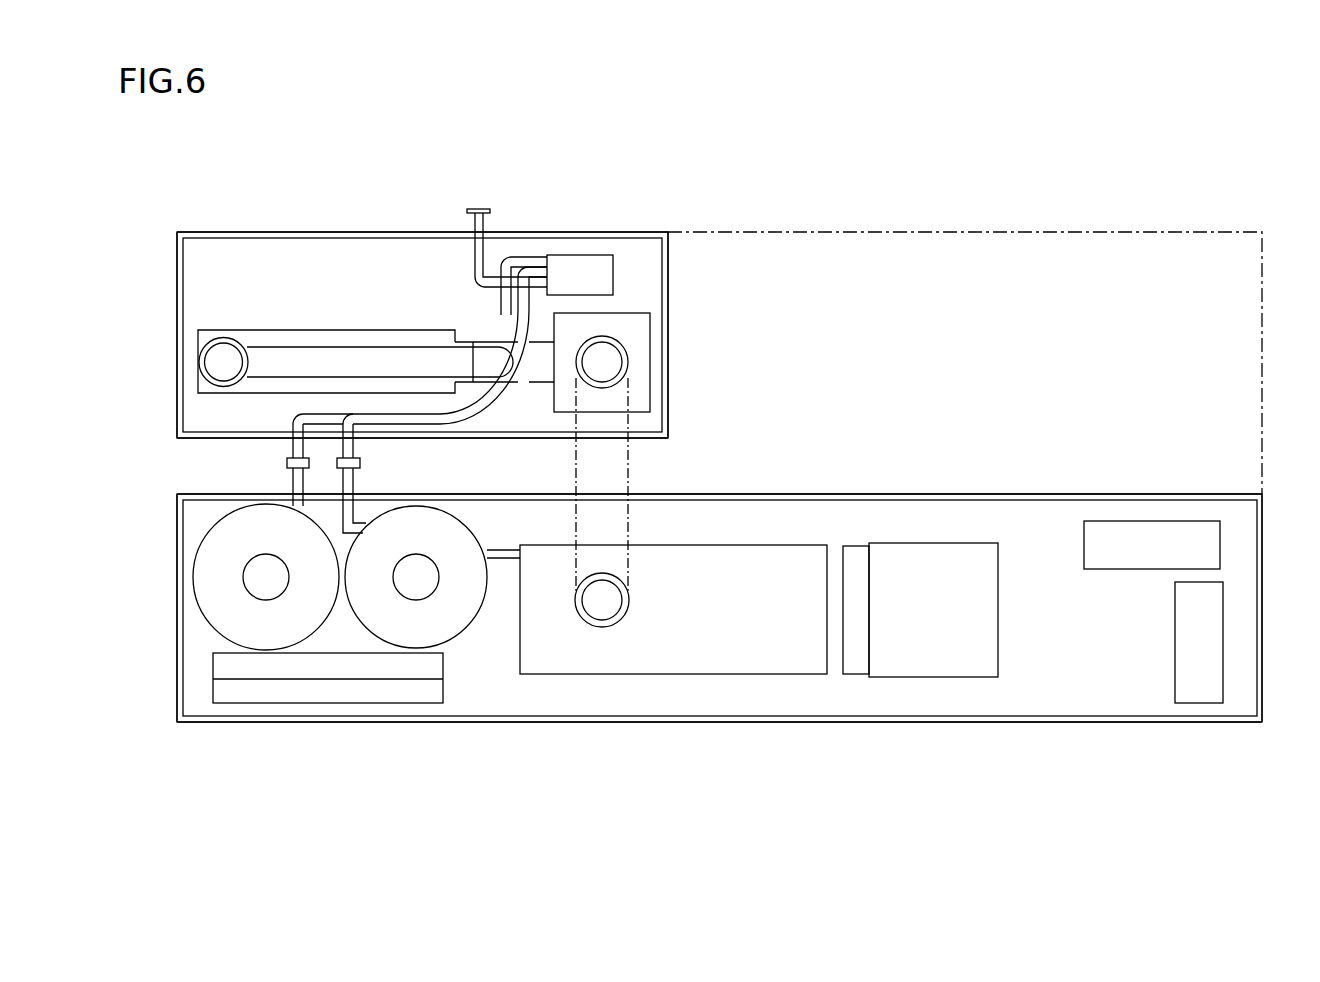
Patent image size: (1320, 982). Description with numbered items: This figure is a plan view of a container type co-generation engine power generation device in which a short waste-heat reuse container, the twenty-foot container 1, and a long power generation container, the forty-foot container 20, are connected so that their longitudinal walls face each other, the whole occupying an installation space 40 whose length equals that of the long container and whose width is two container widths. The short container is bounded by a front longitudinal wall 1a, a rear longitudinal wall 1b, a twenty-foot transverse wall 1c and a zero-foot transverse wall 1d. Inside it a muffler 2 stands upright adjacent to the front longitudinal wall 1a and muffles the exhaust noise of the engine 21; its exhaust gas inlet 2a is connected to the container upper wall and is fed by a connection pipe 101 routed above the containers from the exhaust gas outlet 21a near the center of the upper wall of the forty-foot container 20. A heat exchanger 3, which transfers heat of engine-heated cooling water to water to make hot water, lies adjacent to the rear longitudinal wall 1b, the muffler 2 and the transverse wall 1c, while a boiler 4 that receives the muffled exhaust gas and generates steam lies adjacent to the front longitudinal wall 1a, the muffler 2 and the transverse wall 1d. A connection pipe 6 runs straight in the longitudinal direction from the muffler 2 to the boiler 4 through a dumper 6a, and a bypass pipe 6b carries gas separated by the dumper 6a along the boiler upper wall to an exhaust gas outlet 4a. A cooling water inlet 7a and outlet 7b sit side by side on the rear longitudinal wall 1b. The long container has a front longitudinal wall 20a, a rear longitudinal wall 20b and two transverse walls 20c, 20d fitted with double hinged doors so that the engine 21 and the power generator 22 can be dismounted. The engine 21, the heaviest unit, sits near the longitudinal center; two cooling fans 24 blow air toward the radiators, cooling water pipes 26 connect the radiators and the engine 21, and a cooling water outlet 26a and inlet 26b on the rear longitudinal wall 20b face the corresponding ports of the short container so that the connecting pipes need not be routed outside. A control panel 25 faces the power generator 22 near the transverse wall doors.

The 20-f container 1 is at (627, 210).
The front longitudinal wall 1a is at (281, 231).
The rear longitudinal wall 1b is at (480, 441).
The 20-f transverse wall 1c is at (674, 318).
The 0-f transverse wall 1d is at (170, 318).
The muffler 2 is at (638, 392).
The exhaust gas inlet 2a is at (628, 342).
The heat exchanger 3 is at (569, 268).
The boiler 4 is at (345, 330).
The exhaust gas outlet 4a is at (208, 330).
The connection pipe 6 is at (546, 385).
The dumper 6a is at (487, 338).
The bypass pipe 6b is at (418, 340).
The inlet 7a is at (360, 461).
The outlet 7b is at (287, 461).
The 40-f container 20 is at (697, 794).
The front longitudinal wall 20a is at (857, 732).
The rear longitudinal wall 20b is at (794, 488).
The 40-f transverse wall 20c is at (1268, 615).
The 40-f transverse wall 20d is at (172, 608).
The engine 21 is at (758, 652).
The exhaust gas outlet 21a is at (600, 628).
The power generator 22 is at (927, 654).
The cooling fans 24 is at (262, 630).
The control panel 25 is at (1203, 690).
The cooling water pipes 26 is at (1138, 535).
The outlet 26a is at (360, 467).
The inlet 26b is at (287, 467).
The installation space 40 is at (962, 369).
The connection pipe 101 is at (628, 467).